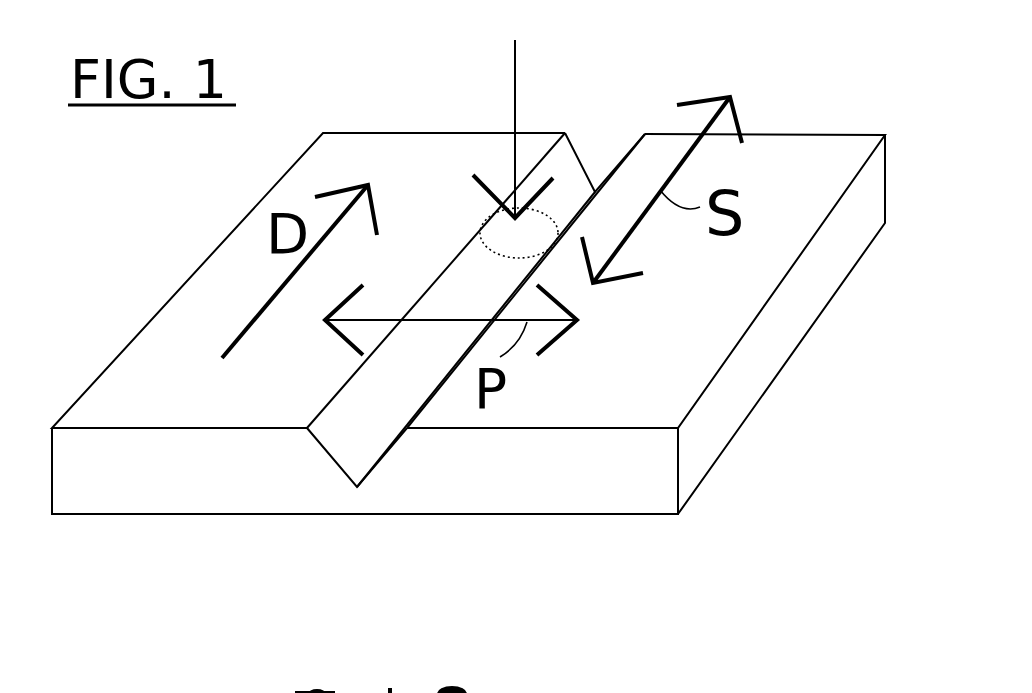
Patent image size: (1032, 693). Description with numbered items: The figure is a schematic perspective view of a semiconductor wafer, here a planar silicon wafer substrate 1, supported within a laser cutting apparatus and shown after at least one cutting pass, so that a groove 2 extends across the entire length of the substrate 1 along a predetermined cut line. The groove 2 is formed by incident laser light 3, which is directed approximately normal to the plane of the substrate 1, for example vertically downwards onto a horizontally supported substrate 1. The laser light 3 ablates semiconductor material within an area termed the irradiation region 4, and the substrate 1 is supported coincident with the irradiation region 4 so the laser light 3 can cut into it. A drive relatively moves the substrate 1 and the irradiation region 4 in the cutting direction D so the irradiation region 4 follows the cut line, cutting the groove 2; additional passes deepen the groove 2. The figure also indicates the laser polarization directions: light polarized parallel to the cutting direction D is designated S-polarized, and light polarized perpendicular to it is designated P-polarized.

The substrate 1 is at (627, 487).
The groove 2 is at (340, 443).
The laser light 3 is at (515, 97).
The irradiation region 4 is at (552, 230).